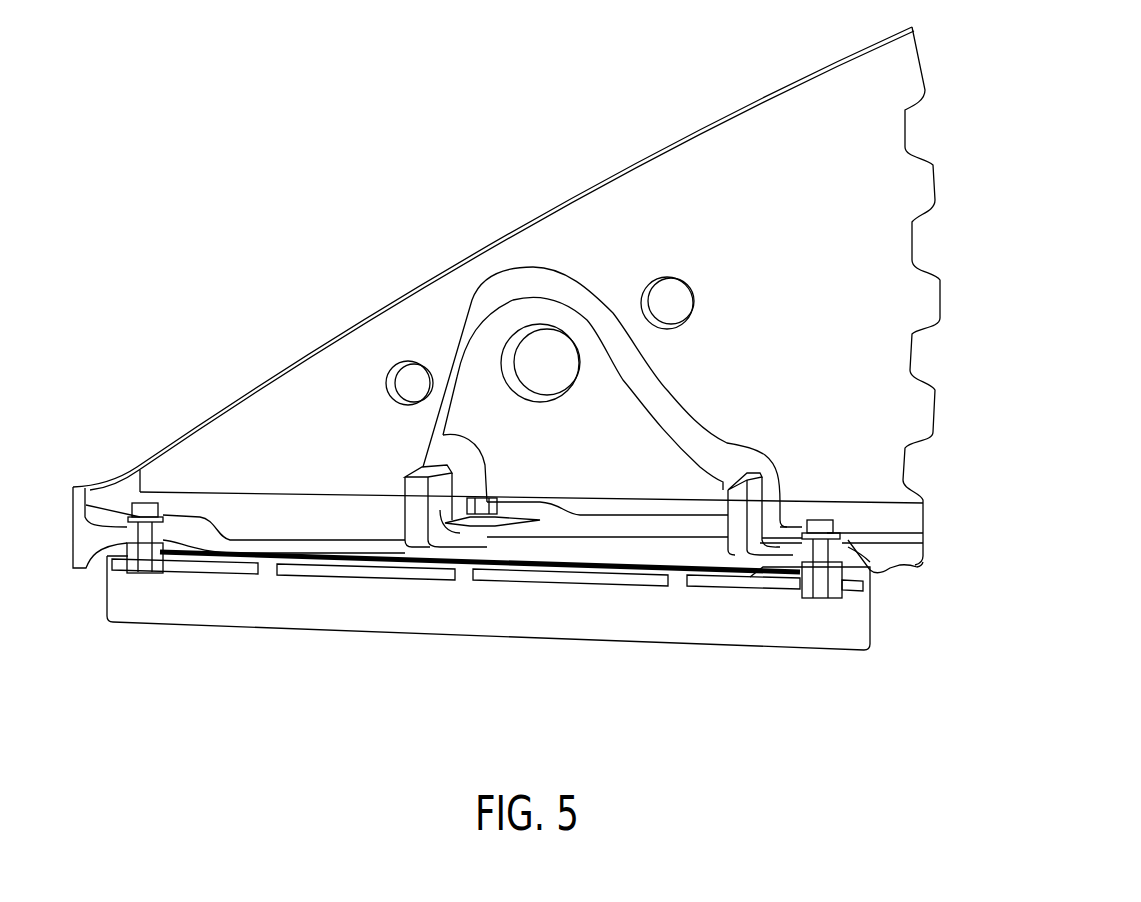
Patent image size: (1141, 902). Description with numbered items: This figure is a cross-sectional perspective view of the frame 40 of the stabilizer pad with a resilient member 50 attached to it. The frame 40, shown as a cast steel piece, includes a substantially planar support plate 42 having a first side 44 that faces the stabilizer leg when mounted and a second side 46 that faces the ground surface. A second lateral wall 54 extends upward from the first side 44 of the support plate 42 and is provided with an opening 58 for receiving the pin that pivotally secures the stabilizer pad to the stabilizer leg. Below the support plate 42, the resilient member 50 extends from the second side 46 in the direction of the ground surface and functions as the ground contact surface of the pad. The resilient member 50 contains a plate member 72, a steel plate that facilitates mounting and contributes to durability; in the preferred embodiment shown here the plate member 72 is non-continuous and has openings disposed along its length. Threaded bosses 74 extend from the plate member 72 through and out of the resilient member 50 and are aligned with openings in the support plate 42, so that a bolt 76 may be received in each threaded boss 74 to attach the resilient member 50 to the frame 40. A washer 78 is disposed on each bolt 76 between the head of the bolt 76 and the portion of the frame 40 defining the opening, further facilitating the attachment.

The frame 40 is at (812, 95).
The support plate 42 is at (205, 548).
The first side 44 is at (367, 540).
The second side 46 is at (417, 555).
The resilient member 50 is at (318, 612).
The second lateral wall 54 is at (545, 248).
The opening 58 is at (535, 367).
The plate member 72 is at (625, 580).
The threaded boss 74 is at (160, 572).
The bolt 76 is at (825, 530).
The washer 78 is at (130, 517).